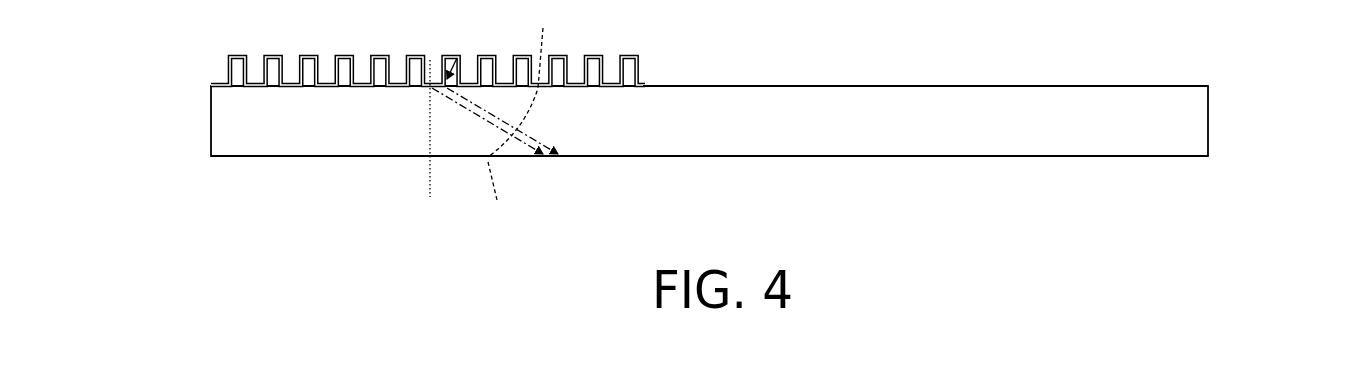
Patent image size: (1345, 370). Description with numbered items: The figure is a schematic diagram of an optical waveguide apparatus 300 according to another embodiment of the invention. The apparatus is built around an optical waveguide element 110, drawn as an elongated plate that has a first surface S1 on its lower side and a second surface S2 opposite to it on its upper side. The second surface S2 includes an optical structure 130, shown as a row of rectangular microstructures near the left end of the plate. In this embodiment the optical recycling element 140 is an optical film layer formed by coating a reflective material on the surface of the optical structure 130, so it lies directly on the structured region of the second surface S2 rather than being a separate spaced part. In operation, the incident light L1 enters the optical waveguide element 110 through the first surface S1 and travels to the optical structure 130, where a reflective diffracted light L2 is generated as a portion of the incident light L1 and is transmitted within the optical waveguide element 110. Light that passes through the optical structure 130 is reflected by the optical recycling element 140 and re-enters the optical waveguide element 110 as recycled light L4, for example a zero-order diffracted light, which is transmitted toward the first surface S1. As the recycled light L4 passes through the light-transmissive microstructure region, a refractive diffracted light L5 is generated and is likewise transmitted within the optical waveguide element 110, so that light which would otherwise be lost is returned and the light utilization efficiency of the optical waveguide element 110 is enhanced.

The optical waveguide element 110 is at (1190, 122).
The optical structure 130 is at (198, 48).
The optical recycling element 140 is at (648, 85).
The optical waveguide apparatus 300 is at (734, 129).
The first surface S1 is at (952, 157).
The second surface S2 is at (952, 86).
The incident light L1 is at (431, 152).
The reflective diffracted light L2 is at (497, 203).
The recycled light L4 is at (454, 57).
The refractive diffracted light L5 is at (521, 78).